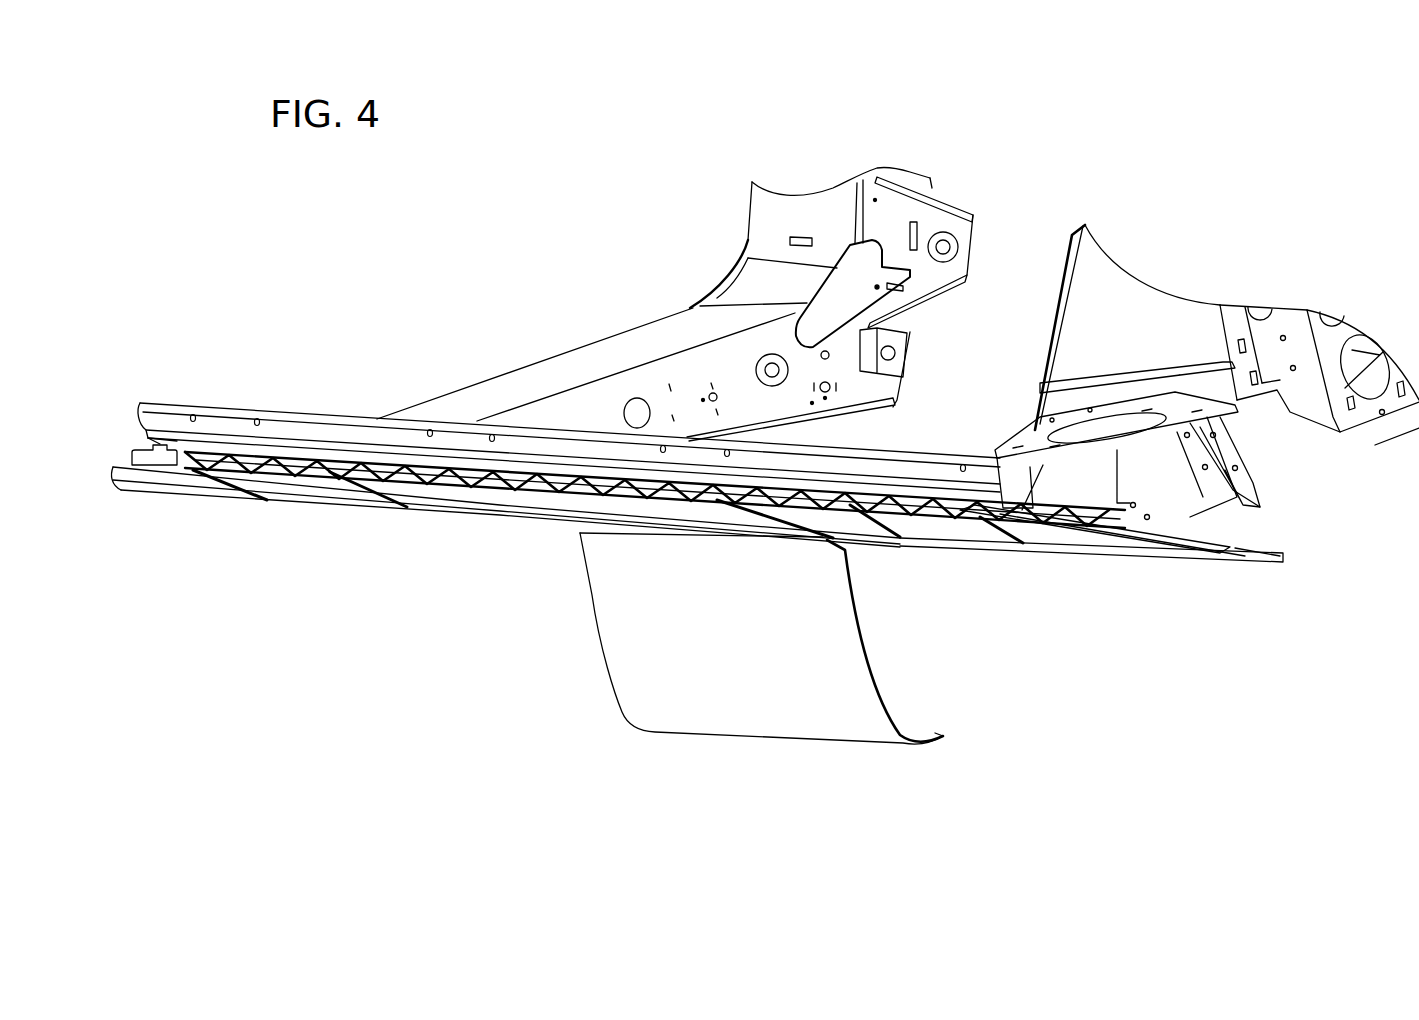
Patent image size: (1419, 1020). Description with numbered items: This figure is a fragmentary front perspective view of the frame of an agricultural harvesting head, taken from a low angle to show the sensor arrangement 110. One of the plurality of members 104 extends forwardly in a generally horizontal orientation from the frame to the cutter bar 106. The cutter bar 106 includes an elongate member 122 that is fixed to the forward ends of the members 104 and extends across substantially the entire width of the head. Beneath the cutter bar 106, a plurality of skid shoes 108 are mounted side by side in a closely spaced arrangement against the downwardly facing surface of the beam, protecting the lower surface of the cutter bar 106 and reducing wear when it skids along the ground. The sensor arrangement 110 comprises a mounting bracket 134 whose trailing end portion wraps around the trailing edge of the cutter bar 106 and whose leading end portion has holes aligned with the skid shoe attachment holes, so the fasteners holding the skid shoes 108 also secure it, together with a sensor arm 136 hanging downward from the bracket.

The member 104 is at (577, 370).
The cutter bar 106 is at (928, 468).
The skid shoe 108 is at (310, 492).
The sensor arrangement 110 is at (675, 612).
The elongate member 122 is at (857, 460).
The mounting bracket 134 is at (570, 502).
The sensor arm 136 is at (765, 667).